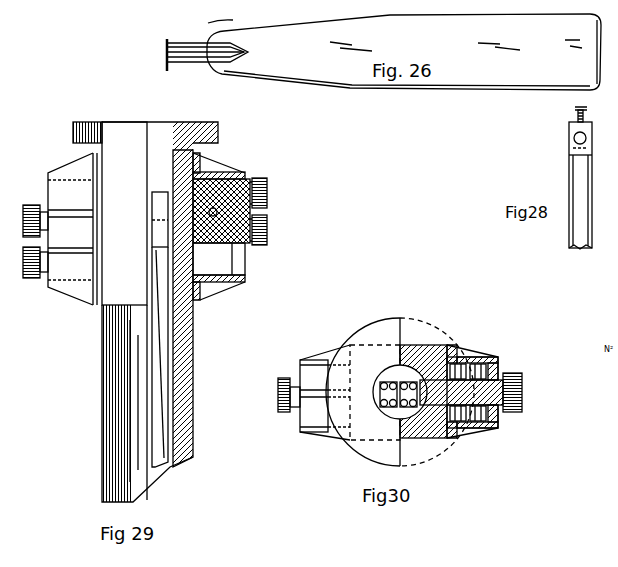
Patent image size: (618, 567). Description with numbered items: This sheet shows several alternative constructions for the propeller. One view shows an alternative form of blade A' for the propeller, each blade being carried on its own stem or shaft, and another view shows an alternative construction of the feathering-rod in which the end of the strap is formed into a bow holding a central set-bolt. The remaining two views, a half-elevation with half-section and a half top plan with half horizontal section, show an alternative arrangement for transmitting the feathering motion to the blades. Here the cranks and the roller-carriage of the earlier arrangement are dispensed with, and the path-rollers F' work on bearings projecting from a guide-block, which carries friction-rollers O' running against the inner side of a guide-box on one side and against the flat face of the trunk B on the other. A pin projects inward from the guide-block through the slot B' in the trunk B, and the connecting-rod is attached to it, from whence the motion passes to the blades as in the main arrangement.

In FIG. 26, the blade A' is at (404, 52).
In FIG. 29, the trunk B is at (152, 312).
In FIG. 30, the trunk B is at (412, 392).
In FIG. 29, the slot B' is at (160, 329).
In FIG. 29, the friction-rollers O' is at (232, 226).
In FIG. 30, the friction-rollers O' is at (470, 403).
In FIG. 29, the path-rollers F' is at (150, 231).
In FIG. 30, the path-rollers F' is at (410, 401).